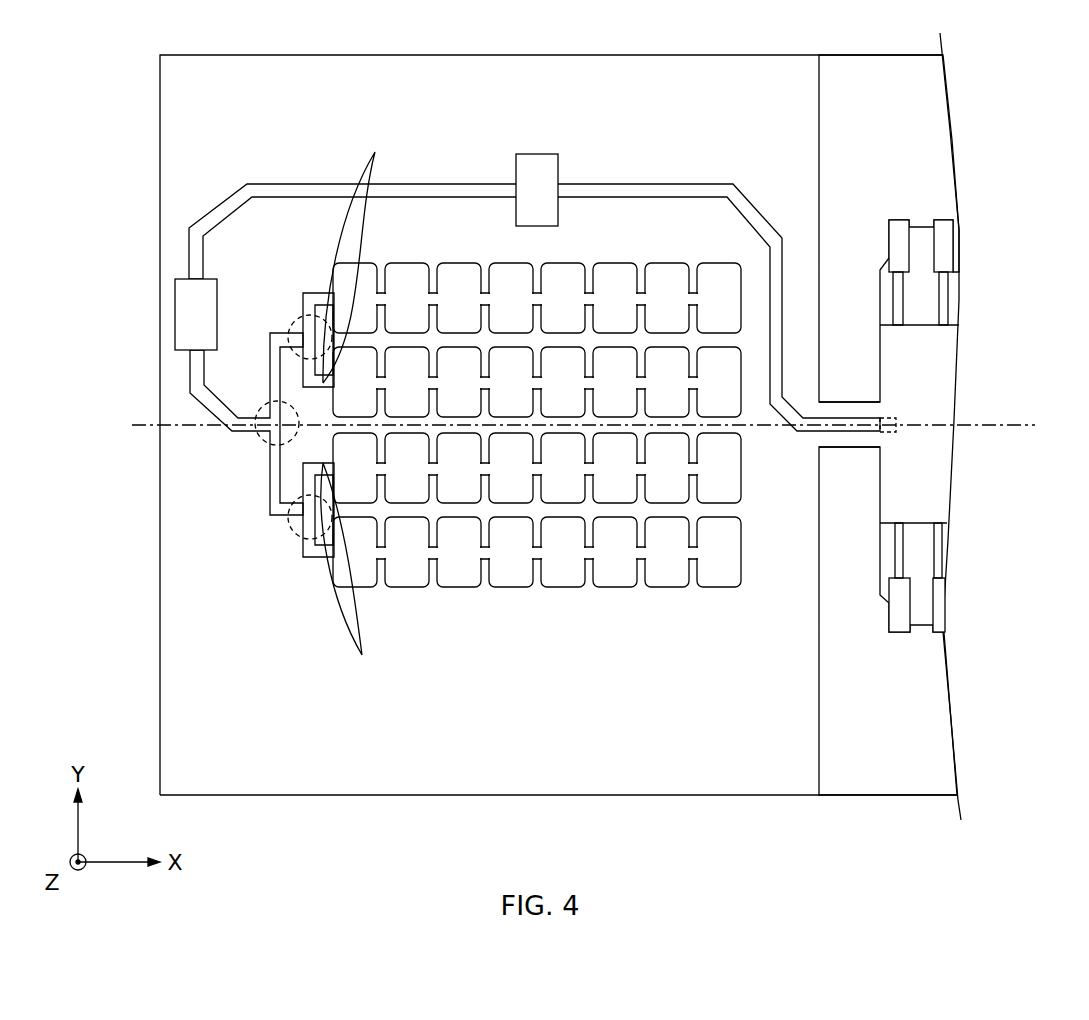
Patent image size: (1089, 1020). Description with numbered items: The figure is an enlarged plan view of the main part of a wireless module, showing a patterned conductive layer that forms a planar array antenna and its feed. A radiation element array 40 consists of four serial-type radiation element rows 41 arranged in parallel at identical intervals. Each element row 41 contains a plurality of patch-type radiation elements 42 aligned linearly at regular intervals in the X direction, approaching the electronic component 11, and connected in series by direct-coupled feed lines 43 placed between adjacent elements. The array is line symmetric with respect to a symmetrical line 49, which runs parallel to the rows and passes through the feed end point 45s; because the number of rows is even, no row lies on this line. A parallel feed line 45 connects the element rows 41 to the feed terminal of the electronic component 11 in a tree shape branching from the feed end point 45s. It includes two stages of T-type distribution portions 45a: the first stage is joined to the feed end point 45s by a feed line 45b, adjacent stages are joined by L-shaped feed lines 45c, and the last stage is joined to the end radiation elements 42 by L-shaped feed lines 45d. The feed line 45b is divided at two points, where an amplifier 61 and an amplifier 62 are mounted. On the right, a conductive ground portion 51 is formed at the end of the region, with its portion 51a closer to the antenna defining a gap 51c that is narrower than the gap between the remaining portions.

The electronic component 11 is at (945, 400).
The radiation element array 40 is at (698, 404).
The serial-type radiation element row 41 is at (698, 396).
The patch-type radiation element 42 is at (413, 262).
The direct-coupled feed line 43 is at (435, 295).
The parallel feed line 45 is at (578, 386).
The T-type distribution portion 45a is at (297, 320).
The feed line 45b is at (612, 190).
The L-shaped feed line 45c is at (270, 373).
The L-shaped feed line 45d is at (358, 406).
The feed end point 45s is at (890, 433).
The symmetrical line 49 is at (148, 427).
The conductive ground portion 51 is at (942, 425).
The portion of conductive ground portion 51a is at (857, 287).
The gap 51c is at (867, 410).
The amplifier 61 is at (537, 154).
The amplifier 62 is at (175, 298).